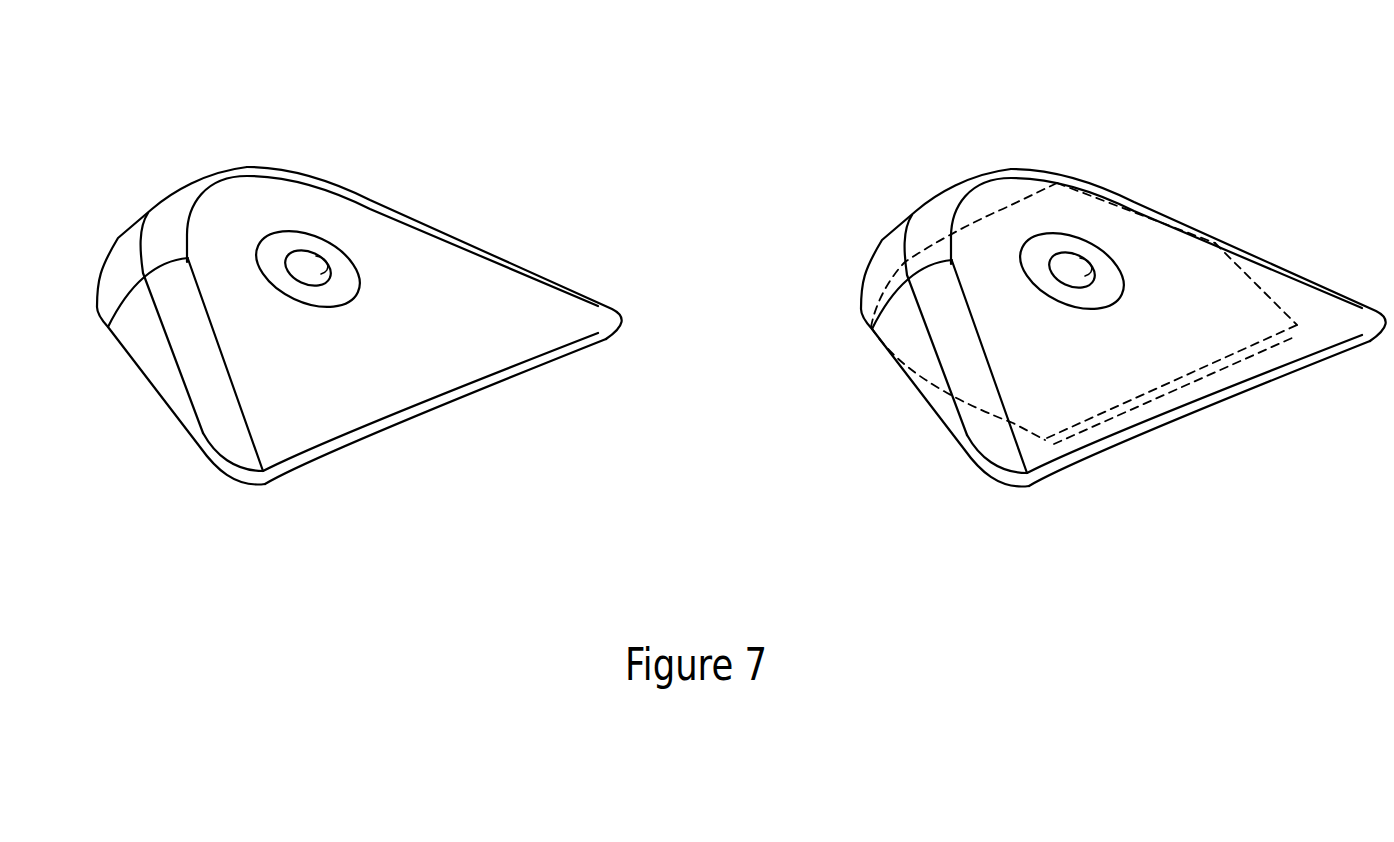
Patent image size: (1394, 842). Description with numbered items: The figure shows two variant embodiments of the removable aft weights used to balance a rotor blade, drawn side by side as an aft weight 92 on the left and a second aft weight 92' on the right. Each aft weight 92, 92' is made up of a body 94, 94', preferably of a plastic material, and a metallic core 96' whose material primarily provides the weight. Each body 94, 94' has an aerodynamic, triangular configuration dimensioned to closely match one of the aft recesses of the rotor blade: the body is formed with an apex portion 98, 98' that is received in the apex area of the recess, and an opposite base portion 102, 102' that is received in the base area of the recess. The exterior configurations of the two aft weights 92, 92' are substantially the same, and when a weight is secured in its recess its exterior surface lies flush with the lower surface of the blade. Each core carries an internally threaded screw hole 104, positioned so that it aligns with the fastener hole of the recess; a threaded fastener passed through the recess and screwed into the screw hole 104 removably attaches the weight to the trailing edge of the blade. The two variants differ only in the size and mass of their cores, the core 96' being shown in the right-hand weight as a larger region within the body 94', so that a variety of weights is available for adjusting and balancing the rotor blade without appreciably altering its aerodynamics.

The apex portion 98 is at (181, 260).
The body 94 is at (392, 204).
The metallic core 96' is at (788, 270).
The aft weight 92 is at (434, 220).
The screw hole 104 is at (330, 270).
The base portion 102 is at (404, 470).
The apex portion 98' is at (945, 261).
The body 94' is at (1156, 206).
The aft weight 92' is at (1198, 221).
The base portion 102' is at (1151, 470).